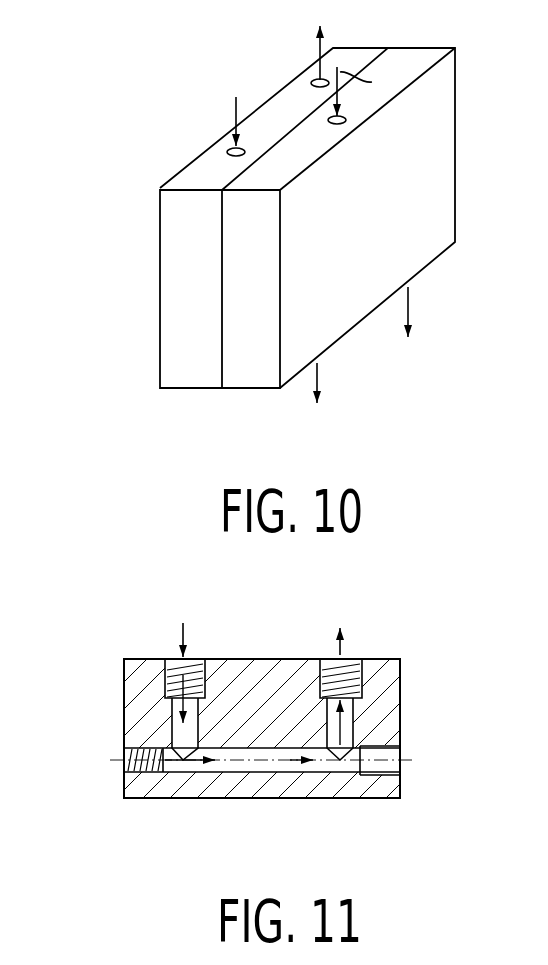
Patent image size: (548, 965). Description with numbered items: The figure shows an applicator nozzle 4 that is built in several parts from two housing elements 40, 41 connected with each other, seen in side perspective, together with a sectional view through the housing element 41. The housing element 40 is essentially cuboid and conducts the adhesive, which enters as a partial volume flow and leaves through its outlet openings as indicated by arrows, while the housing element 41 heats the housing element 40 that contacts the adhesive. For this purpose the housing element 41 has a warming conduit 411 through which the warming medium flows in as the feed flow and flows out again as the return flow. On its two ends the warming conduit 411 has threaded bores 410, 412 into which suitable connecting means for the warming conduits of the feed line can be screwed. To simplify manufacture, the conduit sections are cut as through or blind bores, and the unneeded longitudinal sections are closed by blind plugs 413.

In FIG. 10, the applicator nozzle 4 is at (156, 410).
In FIG. 10, the housing element 40 is at (267, 265).
In FIG. 10, the housing element 41 is at (173, 283).
In FIG. 11, the housing element 41 is at (410, 675).
In FIG. 10, the threaded bore 410 is at (230, 146).
In FIG. 11, the threaded bore 410 is at (180, 672).
In FIG. 11, the warming conduit 411 is at (263, 763).
In FIG. 10, the threaded bore 412 is at (313, 80).
In FIG. 11, the threaded bore 412 is at (347, 664).
In FIG. 11, the blind plug 413 is at (123, 770).